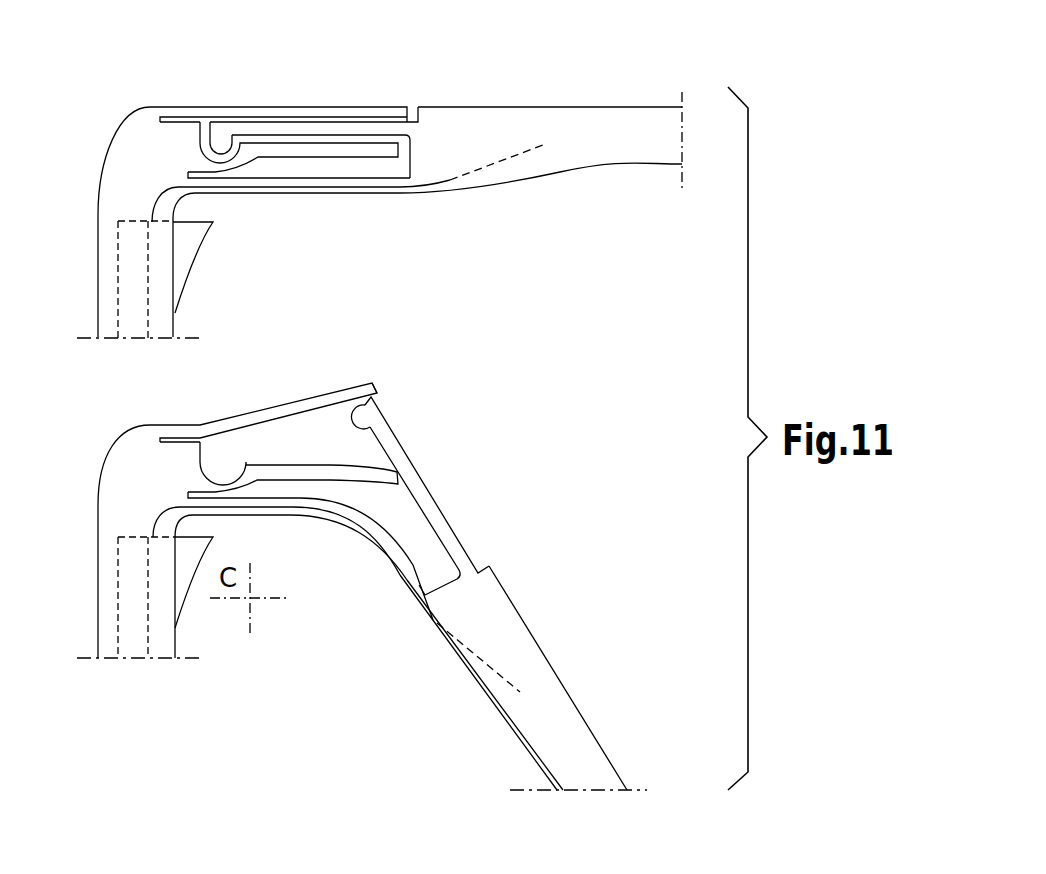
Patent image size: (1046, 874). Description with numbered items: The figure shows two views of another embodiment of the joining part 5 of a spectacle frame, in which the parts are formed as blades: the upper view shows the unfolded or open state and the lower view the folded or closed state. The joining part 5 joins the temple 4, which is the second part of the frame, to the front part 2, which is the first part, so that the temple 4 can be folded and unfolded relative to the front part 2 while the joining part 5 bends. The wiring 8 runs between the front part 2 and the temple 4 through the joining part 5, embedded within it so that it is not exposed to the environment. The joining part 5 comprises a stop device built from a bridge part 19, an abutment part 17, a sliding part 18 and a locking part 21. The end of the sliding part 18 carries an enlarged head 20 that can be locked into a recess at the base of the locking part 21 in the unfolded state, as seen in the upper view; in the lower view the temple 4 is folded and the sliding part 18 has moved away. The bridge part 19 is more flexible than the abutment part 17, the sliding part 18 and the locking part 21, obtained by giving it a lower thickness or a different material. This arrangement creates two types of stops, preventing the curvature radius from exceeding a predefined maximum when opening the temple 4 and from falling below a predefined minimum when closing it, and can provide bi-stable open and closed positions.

The front part 2 is at (159, 302).
The temple 4 is at (628, 120).
The joining part 5 is at (325, 227).
The wiring 8 is at (505, 157).
The abutment part 17 is at (263, 110).
The sliding part 18 is at (330, 128).
The bridge part 19 is at (395, 179).
The enlarged head 20 is at (223, 133).
The locking part 21 is at (374, 152).